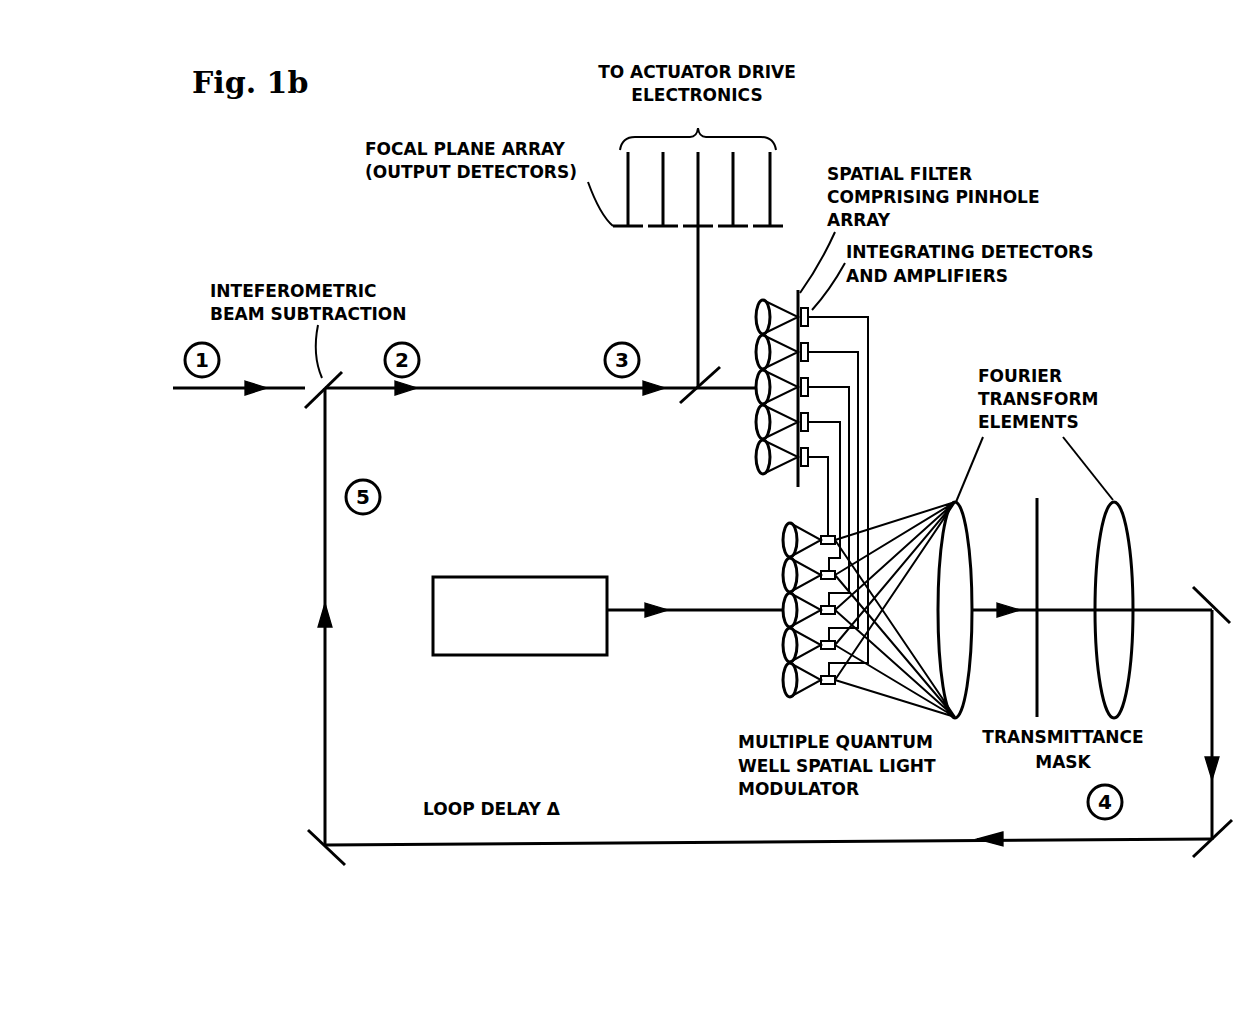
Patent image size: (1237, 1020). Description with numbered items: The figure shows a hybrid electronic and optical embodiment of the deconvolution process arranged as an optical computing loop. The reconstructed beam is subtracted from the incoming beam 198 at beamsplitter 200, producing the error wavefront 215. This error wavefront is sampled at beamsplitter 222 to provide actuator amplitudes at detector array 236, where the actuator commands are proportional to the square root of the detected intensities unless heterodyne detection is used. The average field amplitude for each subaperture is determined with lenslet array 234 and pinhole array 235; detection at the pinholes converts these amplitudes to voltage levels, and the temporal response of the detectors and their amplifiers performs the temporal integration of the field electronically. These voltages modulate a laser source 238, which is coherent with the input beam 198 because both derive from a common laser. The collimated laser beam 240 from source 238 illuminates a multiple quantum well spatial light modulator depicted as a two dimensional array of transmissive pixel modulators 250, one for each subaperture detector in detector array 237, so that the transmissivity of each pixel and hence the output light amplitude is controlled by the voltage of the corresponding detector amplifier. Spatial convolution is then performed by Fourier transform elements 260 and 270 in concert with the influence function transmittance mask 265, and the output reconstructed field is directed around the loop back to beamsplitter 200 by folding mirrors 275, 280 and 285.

The incoming beam 198 is at (183, 400).
The beamsplitter 200 is at (340, 372).
The error wavefront 215 is at (470, 388).
The beamsplitter 222 is at (712, 372).
The lenslet array 234 is at (757, 457).
The pinhole array 235 is at (797, 292).
The detector array 236 is at (655, 228).
The detector array 237 is at (810, 312).
The laser source 238 is at (472, 577).
The collimated laser beam 240 is at (693, 610).
The transmissive pixel modulators 250 is at (828, 690).
The Fourier transform element 260 is at (962, 506).
The influence function transmittance mask 265 is at (1037, 700).
The Fourier transform element 270 is at (1128, 512).
The folding mirror 275 is at (1200, 597).
The folding mirror 280 is at (1193, 852).
The folding mirror 285 is at (345, 863).